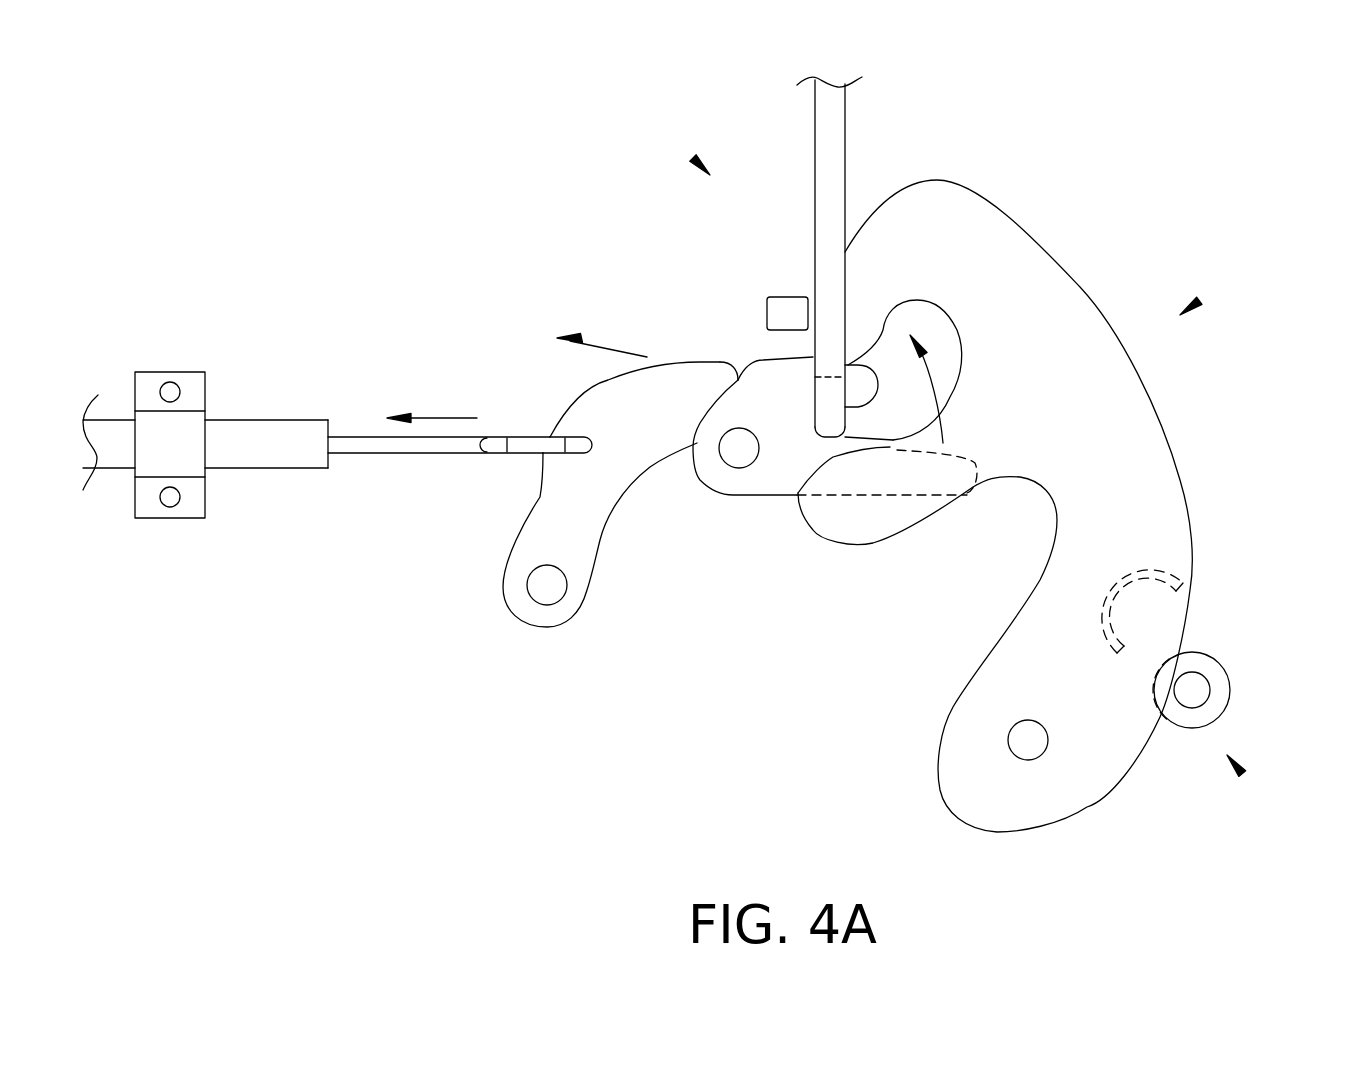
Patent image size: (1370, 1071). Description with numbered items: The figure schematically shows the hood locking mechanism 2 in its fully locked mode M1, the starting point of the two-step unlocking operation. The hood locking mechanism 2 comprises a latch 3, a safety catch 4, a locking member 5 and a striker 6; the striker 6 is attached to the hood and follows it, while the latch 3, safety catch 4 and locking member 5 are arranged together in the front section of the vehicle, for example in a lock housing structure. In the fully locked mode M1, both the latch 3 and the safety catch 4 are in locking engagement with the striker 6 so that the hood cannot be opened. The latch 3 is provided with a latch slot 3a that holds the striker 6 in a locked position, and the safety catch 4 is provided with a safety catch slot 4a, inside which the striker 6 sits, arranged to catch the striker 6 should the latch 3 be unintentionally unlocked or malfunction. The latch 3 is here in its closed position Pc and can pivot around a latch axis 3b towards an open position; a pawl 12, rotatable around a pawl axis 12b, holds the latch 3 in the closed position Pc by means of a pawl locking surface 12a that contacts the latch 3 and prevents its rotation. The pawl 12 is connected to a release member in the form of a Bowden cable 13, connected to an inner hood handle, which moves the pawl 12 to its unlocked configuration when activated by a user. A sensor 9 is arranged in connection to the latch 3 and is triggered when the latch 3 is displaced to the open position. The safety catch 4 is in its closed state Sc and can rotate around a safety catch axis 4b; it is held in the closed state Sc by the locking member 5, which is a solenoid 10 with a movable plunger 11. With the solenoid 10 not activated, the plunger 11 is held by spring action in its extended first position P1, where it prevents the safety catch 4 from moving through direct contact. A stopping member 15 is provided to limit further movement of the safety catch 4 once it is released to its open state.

The hood locking mechanism 2 is at (930, 477).
The latch 3 is at (893, 388).
The latch slot 3a is at (957, 313).
The latch axis 3b is at (739, 448).
The safety catch 4 is at (995, 534).
The safety catch slot 4a is at (880, 415).
The safety catch axis 4b is at (1028, 740).
The locking member 5 is at (1255, 700).
The striker 6 is at (827, 147).
The sensor 9 is at (778, 297).
The solenoid 10 is at (1228, 700).
The plunger 11 is at (1192, 688).
The pawl 12 is at (601, 482).
The pawl locking surface 12a is at (738, 380).
The pawl axis 12b is at (547, 585).
The Bowden cable 13 is at (273, 440).
The stopping member 15 is at (1097, 618).
The fully locked mode M1 is at (700, 165).
The closed position Pc is at (450, 270).
The closed state Sc is at (1203, 298).
The extended first position P1 is at (1250, 783).